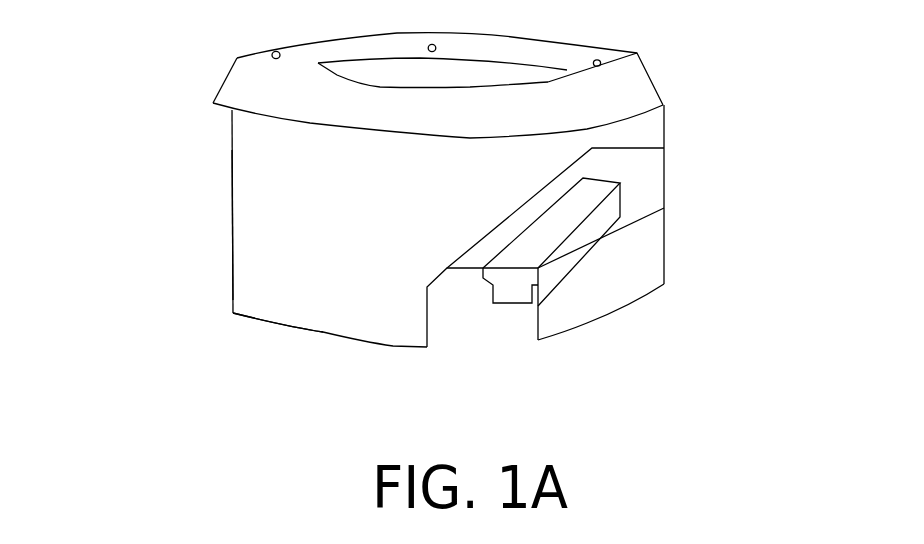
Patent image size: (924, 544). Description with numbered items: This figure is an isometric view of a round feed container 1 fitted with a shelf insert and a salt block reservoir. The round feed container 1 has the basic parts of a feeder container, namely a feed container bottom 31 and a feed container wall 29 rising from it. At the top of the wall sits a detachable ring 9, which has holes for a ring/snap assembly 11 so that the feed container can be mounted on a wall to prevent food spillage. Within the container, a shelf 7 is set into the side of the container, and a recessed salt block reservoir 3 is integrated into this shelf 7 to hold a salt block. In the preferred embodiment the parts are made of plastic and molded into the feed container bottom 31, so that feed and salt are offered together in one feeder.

The round feed container 1 is at (232, 182).
The recessed salt block reservoir 3 is at (540, 238).
The shelf 7 is at (647, 196).
The detachable ring 9 is at (223, 83).
The ring/snap assembly 11 is at (638, 55).
The feed container wall 29 is at (232, 252).
The feed container bottom 31 is at (322, 333).